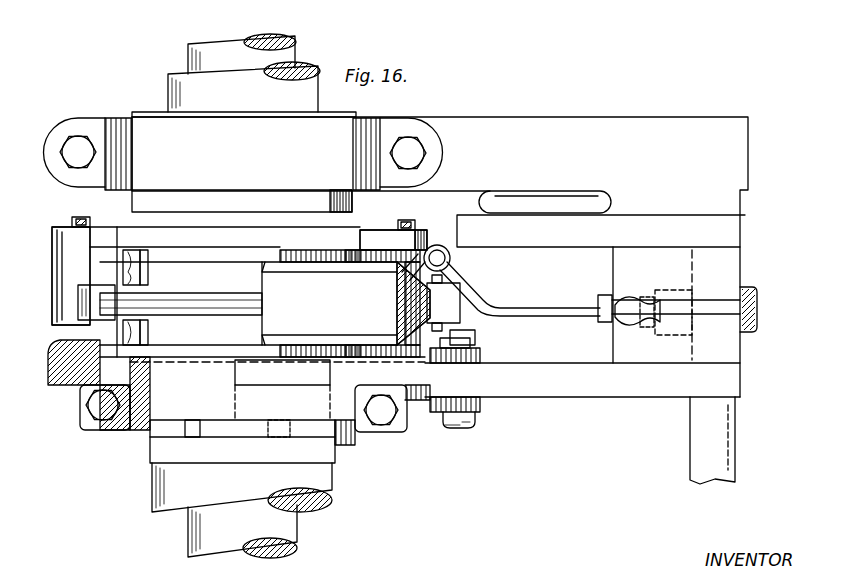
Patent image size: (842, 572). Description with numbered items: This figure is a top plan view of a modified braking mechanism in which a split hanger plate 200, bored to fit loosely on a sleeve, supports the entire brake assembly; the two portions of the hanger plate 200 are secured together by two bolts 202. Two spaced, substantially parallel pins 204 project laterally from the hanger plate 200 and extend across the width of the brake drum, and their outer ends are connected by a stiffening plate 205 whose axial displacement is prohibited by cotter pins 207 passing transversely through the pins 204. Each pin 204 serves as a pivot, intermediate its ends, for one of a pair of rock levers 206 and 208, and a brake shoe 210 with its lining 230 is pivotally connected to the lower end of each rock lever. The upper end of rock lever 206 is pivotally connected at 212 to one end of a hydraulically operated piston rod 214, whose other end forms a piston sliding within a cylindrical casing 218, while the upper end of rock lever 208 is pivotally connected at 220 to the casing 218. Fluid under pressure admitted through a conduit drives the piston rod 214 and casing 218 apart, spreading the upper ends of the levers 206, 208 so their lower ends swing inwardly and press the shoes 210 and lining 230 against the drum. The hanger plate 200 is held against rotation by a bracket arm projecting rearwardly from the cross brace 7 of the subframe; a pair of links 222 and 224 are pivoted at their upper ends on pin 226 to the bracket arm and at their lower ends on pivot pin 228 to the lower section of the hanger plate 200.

The pins 204 is at (60, 228).
The cotter pins 207 is at (84, 216).
The brake shoe 210 is at (118, 245).
The pivotal connection 212 is at (72, 282).
The lining 230 is at (148, 270).
The piston rod 214 is at (212, 297).
The cylindrical casing 218 is at (280, 268).
The rock lever 206 is at (80, 318).
The stiffening plate 205 is at (372, 232).
The pivotal connection 220 is at (448, 268).
The rock lever 208 is at (483, 296).
The pivot pin 228 is at (470, 332).
The link 224 is at (462, 352).
The cross brace 7 is at (733, 275).
The split hanger plate 200 is at (236, 378).
The bolts 202 is at (95, 430).
The link 222 is at (480, 408).
The pin 226 is at (458, 428).